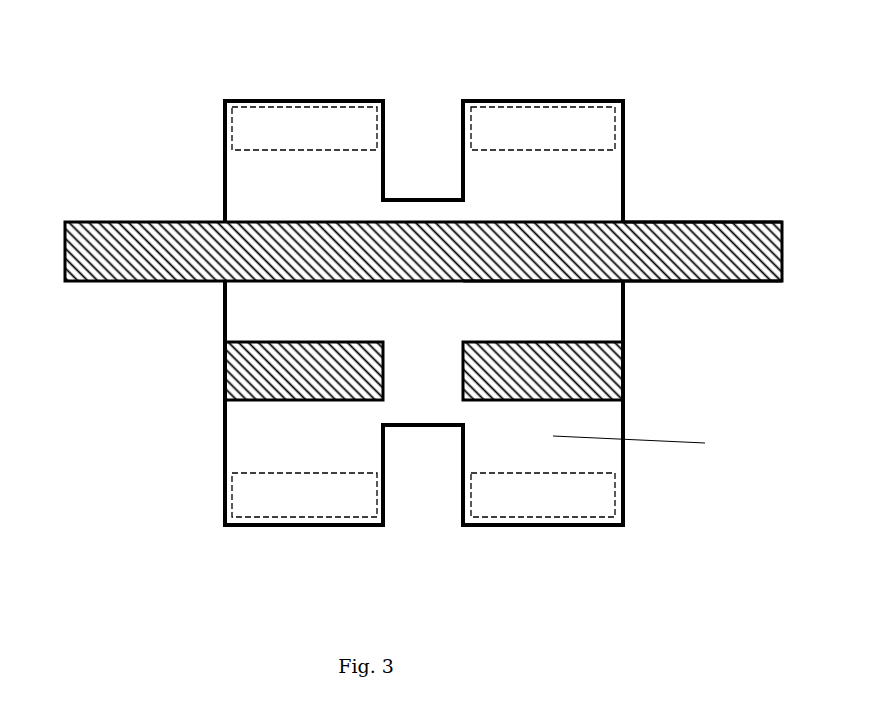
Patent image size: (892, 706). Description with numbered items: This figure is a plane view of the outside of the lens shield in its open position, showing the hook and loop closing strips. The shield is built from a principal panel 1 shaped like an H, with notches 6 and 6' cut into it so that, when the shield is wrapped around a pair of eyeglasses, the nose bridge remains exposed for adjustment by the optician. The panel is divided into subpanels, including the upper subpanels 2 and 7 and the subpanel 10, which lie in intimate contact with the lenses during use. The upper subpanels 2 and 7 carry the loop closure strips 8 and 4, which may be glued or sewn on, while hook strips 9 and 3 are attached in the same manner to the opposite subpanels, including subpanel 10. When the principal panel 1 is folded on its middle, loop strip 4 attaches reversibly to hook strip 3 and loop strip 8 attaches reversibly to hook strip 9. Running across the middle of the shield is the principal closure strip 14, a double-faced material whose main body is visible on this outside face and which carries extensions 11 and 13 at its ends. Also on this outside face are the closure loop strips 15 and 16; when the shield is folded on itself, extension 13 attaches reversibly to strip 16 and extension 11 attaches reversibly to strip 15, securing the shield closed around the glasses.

The principal panel 1 is at (716, 139).
The upper subpanel 2 is at (240, 188).
The hook strip 3 is at (583, 497).
The loop closure strip 4 is at (583, 124).
The notch 6 is at (426, 124).
The notch 6' is at (442, 513).
The upper subpanel 7 is at (590, 192).
The loop closure strip 8 is at (255, 128).
The hook strip 9 is at (265, 495).
The subpanel 10 is at (305, 436).
The extension 11 is at (98, 222).
The extension 13 is at (740, 222).
The principal closure strip 14 is at (548, 280).
The closure loop strip 15 is at (265, 368).
The closure loop strip 16 is at (555, 362).